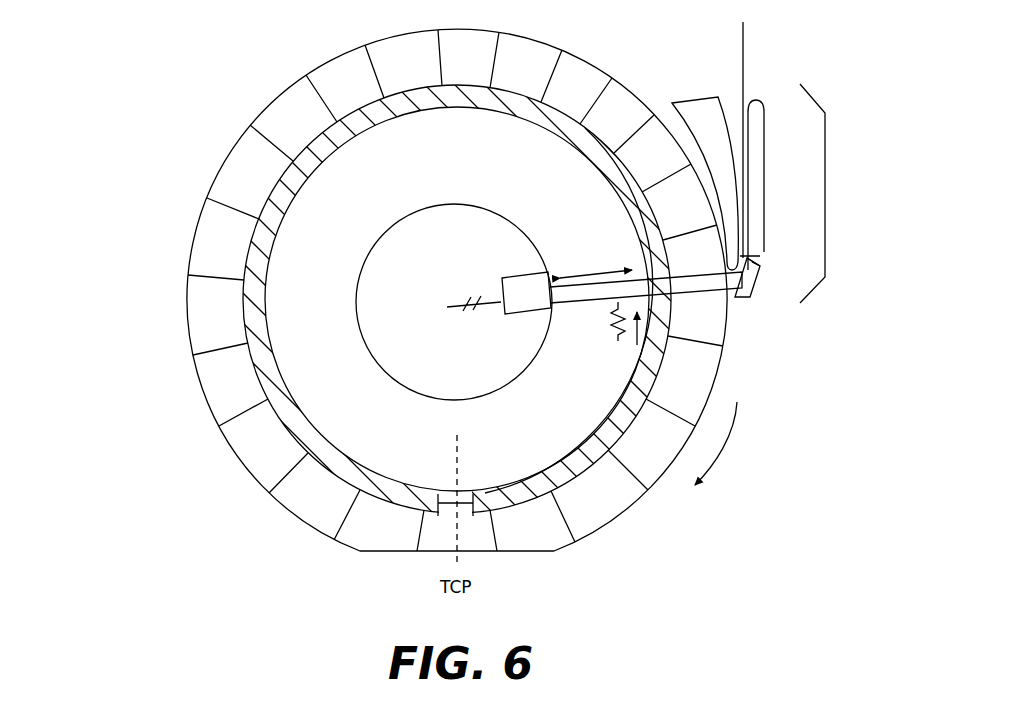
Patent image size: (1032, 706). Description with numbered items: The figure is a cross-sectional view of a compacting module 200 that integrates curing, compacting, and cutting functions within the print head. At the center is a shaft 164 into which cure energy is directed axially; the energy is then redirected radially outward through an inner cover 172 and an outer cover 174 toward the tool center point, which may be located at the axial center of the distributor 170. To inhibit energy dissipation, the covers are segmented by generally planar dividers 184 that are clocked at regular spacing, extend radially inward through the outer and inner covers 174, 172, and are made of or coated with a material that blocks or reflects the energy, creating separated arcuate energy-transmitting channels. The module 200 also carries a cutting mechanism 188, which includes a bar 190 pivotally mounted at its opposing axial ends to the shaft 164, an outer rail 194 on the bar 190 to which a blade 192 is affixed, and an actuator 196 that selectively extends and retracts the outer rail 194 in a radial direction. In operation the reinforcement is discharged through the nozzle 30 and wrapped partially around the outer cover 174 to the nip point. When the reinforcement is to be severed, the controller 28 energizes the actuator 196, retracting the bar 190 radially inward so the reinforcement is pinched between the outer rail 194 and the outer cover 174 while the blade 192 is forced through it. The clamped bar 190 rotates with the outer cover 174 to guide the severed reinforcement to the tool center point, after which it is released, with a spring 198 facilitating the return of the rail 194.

The module 200 is at (108, 70).
The nozzle 30 is at (750, 96).
The cutting mechanism 188 is at (826, 190).
The outer rail 194 is at (748, 257).
The blade 192 is at (752, 290).
The distributor 170 is at (470, 162).
The shaft 164 is at (461, 364).
The actuators 196 is at (543, 299).
The bar 190 is at (563, 300).
The spring 198 is at (618, 342).
The outer cover 174 is at (215, 378).
The inner cover 172 is at (243, 450).
The dividers 184 is at (280, 478).
The controller 28 is at (455, 304).